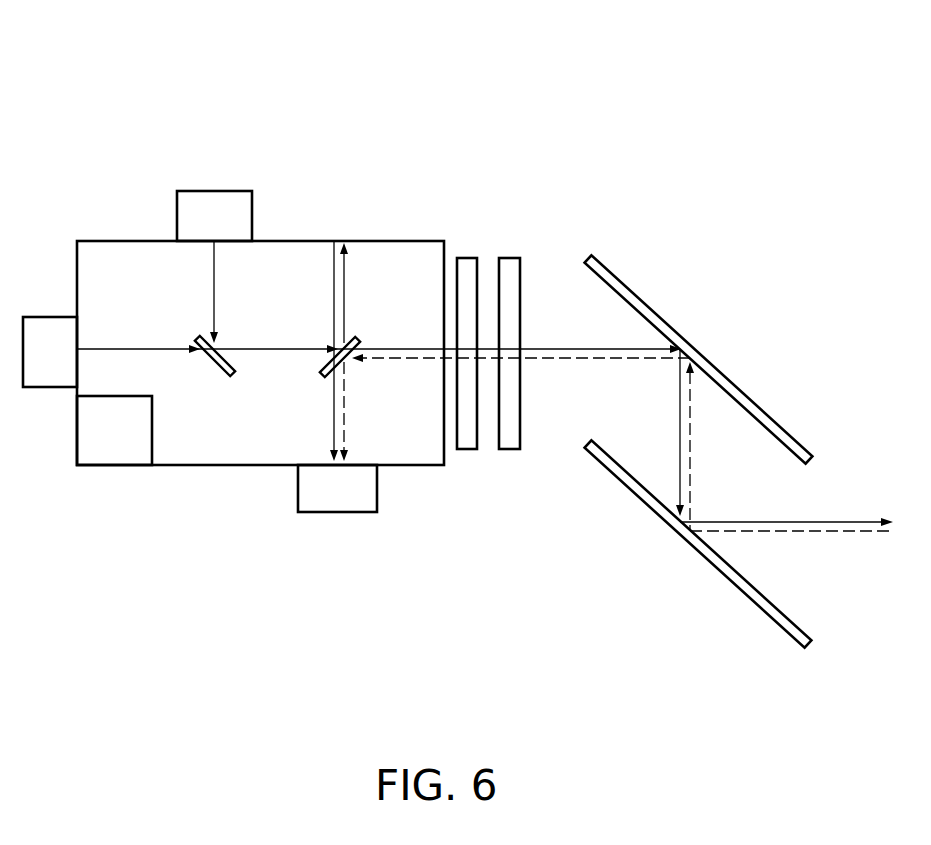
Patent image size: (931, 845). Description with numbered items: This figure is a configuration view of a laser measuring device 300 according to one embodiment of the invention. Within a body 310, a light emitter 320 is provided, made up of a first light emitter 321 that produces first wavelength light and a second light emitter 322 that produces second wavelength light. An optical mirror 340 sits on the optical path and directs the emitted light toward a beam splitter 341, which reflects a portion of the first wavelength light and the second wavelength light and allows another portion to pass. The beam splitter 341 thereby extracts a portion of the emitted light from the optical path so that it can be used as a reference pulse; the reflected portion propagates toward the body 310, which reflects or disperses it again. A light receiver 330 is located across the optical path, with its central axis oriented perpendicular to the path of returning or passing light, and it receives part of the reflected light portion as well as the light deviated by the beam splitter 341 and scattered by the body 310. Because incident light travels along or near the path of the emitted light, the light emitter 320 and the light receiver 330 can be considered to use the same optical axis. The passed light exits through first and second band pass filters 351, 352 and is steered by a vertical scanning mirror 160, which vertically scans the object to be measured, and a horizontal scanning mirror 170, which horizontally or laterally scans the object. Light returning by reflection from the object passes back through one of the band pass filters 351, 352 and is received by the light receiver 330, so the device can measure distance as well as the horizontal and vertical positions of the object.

The laser measuring device 300 is at (331, 34).
The body 310 is at (385, 242).
The light emitter 320 is at (136, 210).
The first light emitter 321 is at (205, 190).
The second light emitter 322 is at (43, 317).
The light receiver 330 is at (345, 513).
The optical mirror 340 is at (212, 363).
The beam splitter 341 is at (353, 338).
The first band pass filter 351 is at (465, 257).
The second band pass filter 352 is at (507, 257).
The vertical scanning mirror 160 is at (665, 318).
The horizontal scanning mirror 170 is at (630, 493).